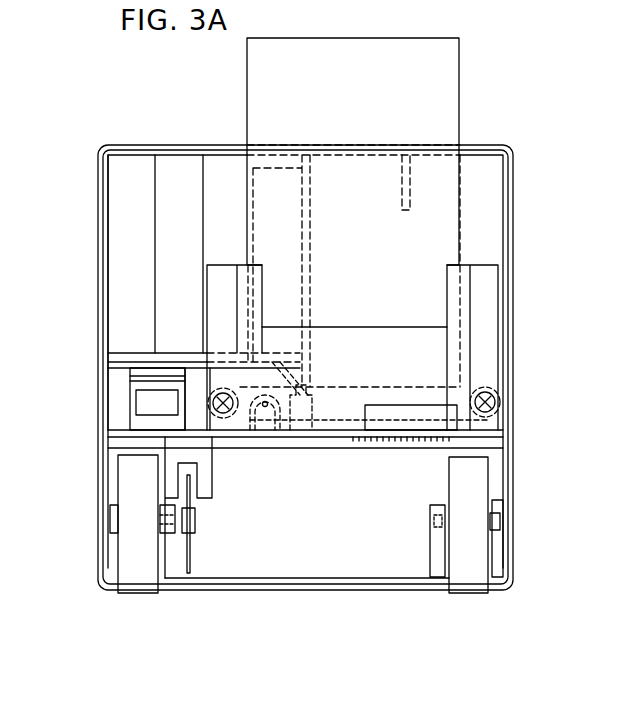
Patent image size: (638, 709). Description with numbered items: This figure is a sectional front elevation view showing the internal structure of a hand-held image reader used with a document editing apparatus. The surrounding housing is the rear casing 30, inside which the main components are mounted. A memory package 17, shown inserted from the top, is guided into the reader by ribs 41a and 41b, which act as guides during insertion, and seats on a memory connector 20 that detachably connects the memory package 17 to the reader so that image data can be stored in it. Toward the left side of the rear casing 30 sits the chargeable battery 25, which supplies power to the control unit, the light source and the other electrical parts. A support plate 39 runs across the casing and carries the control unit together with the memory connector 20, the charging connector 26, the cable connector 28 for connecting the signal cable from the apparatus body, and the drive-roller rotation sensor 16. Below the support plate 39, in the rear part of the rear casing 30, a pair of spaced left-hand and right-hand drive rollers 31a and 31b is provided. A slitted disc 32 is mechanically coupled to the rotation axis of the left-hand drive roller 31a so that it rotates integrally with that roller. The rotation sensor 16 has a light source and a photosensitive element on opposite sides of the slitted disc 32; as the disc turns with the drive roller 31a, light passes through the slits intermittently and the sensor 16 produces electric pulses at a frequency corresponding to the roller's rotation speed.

The drive-roller rotation sensor 16 is at (207, 468).
The memory package 17 is at (456, 38).
The memory connector 20 is at (485, 297).
The chargeable battery 25 is at (188, 178).
The charging connector 26 is at (254, 393).
The cable connector 28 is at (152, 400).
The rear casing 30 is at (516, 170).
The left-hand drive roller 31a is at (142, 578).
The right-hand drive roller 31b is at (468, 574).
The slitted disc 32 is at (191, 552).
The support plate 39 is at (350, 437).
The rib 41a is at (410, 182).
The rib 41b is at (302, 196).